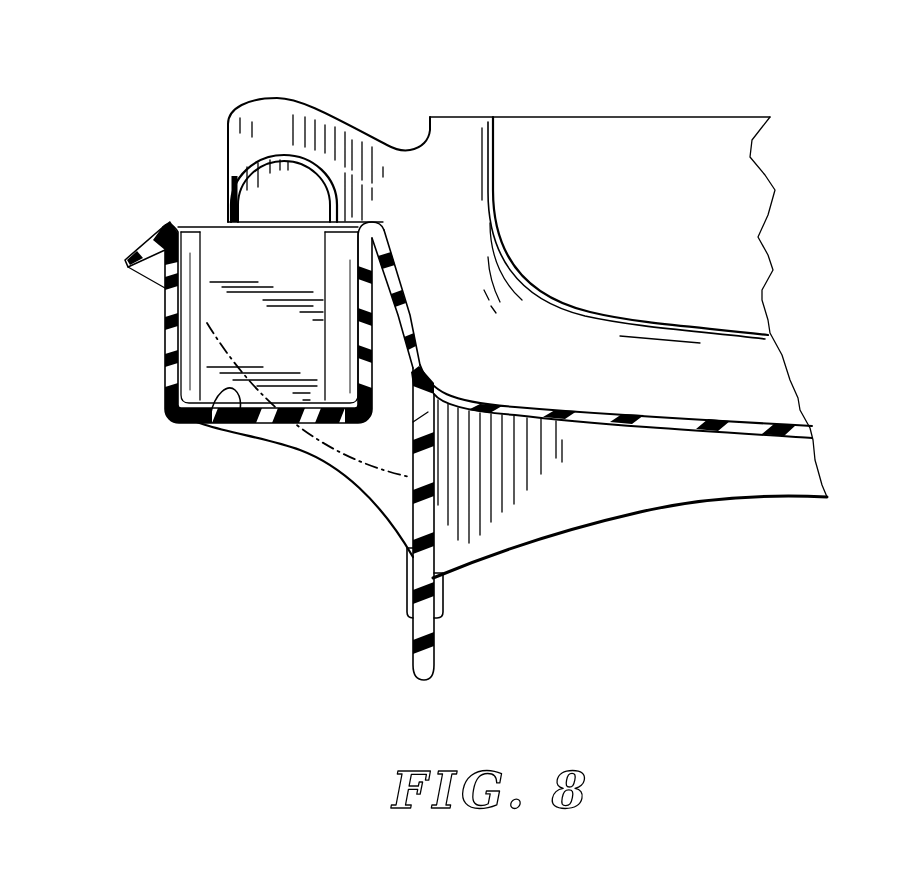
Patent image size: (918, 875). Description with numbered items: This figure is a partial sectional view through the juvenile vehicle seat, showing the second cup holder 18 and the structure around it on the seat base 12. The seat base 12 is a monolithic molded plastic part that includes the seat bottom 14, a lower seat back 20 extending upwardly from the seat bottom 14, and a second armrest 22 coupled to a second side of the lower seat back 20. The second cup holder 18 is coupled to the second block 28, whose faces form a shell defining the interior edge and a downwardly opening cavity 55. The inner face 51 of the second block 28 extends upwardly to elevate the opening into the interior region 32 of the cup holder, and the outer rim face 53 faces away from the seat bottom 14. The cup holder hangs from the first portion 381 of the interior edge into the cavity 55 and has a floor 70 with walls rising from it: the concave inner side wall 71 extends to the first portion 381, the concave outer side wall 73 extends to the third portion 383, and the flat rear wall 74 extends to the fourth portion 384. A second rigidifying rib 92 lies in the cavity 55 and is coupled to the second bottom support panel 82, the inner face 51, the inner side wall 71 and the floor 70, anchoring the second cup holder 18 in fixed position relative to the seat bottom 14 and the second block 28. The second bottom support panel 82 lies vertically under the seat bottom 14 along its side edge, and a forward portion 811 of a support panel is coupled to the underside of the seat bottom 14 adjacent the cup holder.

The seat base 12 is at (150, 117).
The seat bottom 14 is at (702, 405).
The second cup holder 18 is at (149, 424).
The lower seat back 20 is at (617, 163).
The second armrest 22 is at (321, 88).
The second block 28 is at (116, 261).
The interior region 32 is at (233, 249).
The inner face 51 is at (410, 310).
The outer rim face 53 is at (145, 240).
The downwardly opening cavity 55 is at (386, 387).
The floor 70 is at (210, 415).
The inner side wall 71 is at (363, 332).
The outer side wall 73 is at (163, 333).
The rear wall 74 is at (247, 349).
The second bottom support panel 82 is at (453, 521).
The second rigidifying rib 92 is at (307, 473).
The first portion of interior edge 381 is at (374, 223).
The third portion of interior edge 383 is at (162, 222).
The fourth portion of interior edge 384 is at (287, 220).
The forward portion 811 is at (427, 583).